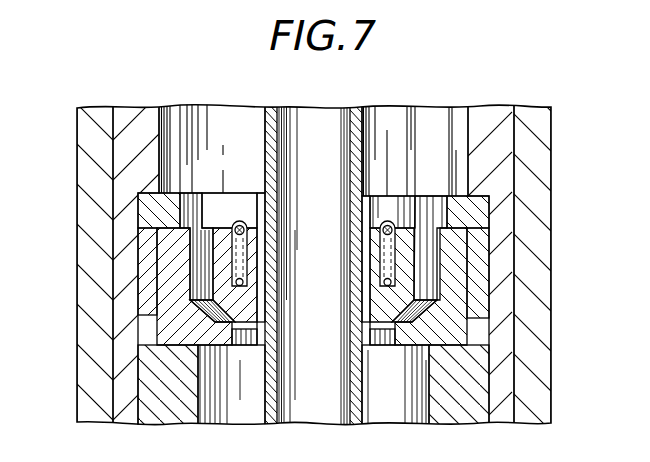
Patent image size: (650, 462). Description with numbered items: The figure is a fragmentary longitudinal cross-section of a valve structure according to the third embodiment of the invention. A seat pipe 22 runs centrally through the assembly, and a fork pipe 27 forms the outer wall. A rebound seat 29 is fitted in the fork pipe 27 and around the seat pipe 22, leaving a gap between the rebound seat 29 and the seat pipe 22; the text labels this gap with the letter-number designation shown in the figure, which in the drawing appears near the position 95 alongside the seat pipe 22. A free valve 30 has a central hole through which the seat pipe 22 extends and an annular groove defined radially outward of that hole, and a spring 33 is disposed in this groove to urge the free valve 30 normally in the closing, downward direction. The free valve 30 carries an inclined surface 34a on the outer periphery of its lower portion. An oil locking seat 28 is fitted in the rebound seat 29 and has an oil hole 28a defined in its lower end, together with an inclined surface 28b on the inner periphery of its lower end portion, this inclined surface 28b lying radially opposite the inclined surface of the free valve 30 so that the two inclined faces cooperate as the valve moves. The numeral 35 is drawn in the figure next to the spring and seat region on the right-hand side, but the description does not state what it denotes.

The seat pipe 22 is at (362, 132).
The fork pipe 27 is at (502, 398).
The oil locking seat 28 is at (453, 276).
The oil hole 28a is at (383, 342).
The inclined surface 28b is at (407, 322).
The rebound seat 29 is at (480, 216).
The free valve 30 is at (190, 257).
The spring 33 is at (235, 222).
The inclined surface 34a is at (216, 306).
The resilient sealing element 35 is at (423, 253).
The annular clearance gap 95 is at (367, 212).